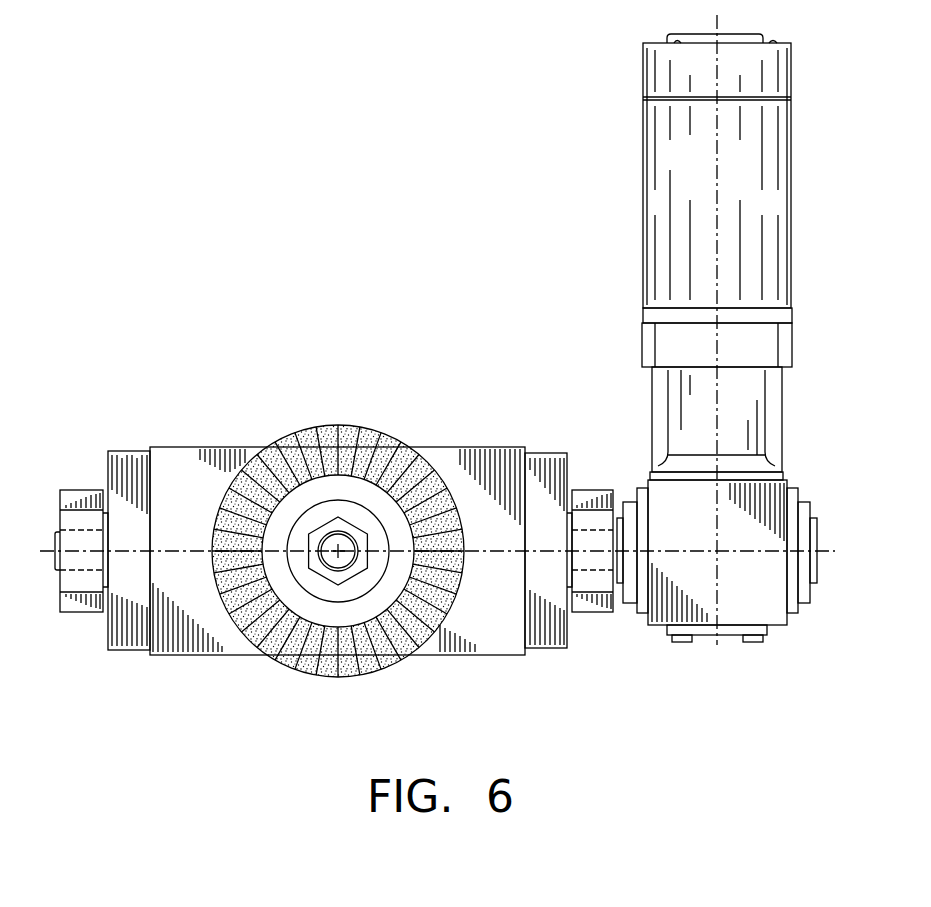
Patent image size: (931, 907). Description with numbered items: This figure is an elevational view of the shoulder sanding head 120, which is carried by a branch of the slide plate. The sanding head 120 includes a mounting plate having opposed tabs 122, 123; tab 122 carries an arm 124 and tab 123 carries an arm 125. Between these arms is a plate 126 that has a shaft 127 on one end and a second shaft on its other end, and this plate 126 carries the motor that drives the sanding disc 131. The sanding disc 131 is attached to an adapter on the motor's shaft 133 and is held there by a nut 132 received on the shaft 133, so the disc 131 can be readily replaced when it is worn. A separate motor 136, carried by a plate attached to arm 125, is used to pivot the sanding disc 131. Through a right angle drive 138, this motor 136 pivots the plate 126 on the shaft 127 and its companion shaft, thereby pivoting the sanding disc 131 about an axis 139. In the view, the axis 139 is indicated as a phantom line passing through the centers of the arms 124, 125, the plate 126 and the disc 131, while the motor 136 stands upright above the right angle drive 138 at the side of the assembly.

The shoulder sanding head 120 is at (273, 98).
The tab 122 is at (130, 452).
The tab 123 is at (543, 453).
The arm 124 is at (83, 489).
The arm 125 is at (593, 490).
The plate 126 is at (483, 623).
The shaft 127 is at (80, 573).
The sanding disc 131 is at (303, 447).
The nut 132 is at (352, 527).
The shaft 133 is at (330, 563).
The motor 136 is at (680, 217).
The right angle drive 138 is at (762, 597).
The axis 139 is at (177, 550).